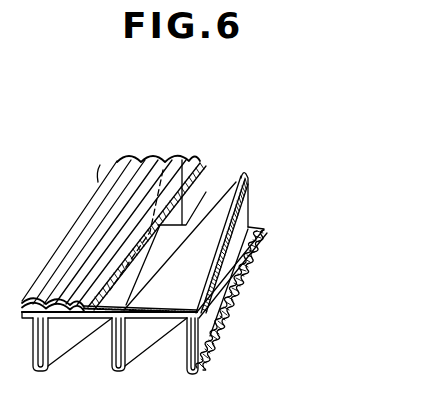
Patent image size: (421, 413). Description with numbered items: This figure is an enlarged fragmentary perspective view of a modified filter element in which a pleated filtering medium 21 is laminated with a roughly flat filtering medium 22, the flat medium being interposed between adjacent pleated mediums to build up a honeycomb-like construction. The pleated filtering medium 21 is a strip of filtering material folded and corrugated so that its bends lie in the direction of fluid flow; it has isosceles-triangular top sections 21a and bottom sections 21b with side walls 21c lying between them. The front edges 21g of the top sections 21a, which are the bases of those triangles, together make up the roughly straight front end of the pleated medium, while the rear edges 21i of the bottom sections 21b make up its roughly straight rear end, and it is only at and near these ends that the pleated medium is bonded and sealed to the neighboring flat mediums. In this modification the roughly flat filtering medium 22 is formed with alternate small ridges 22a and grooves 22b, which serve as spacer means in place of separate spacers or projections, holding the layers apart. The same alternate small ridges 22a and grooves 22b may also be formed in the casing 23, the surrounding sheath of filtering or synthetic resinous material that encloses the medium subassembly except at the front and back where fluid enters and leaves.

The pleated filtering medium 21 is at (262, 193).
The triangular top section 21a is at (233, 177).
The triangular bottom section 21b is at (162, 252).
The side wall 21c is at (205, 310).
The front edge of top section 21g is at (93, 320).
The rear edge of bottom section 21i is at (206, 192).
The roughly flat filtering medium 22 is at (182, 160).
The casing 23 is at (182, 160).
The small ridge 22a is at (117, 159).
The groove 22b is at (133, 157).